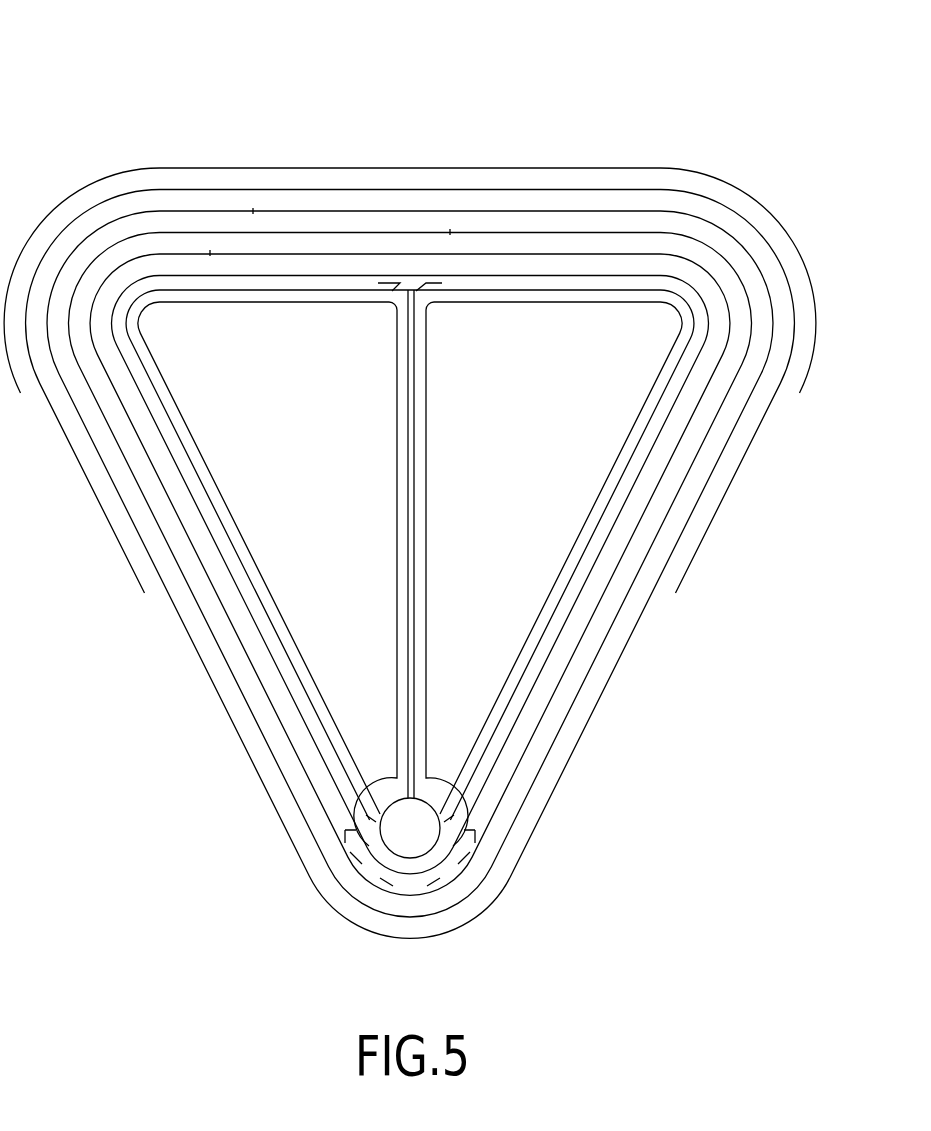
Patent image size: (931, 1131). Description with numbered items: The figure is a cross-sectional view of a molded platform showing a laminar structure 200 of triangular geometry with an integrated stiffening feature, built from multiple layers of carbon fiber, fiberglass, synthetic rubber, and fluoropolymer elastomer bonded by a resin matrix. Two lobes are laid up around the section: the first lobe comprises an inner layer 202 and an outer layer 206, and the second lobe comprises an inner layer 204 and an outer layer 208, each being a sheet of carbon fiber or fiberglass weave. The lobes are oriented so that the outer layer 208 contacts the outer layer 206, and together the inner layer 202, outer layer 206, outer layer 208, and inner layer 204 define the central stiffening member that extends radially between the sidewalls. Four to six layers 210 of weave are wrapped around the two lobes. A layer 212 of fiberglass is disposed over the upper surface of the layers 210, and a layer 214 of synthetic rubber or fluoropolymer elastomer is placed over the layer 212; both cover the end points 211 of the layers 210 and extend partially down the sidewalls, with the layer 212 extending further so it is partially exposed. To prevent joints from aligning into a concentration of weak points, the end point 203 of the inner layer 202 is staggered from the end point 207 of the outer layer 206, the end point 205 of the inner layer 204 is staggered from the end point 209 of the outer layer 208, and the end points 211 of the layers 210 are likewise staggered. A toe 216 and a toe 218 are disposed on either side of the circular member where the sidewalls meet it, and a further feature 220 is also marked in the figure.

The laminar structure 200 is at (140, 85).
The inner layer 202 is at (396, 552).
The end point 203 is at (178, 302).
The inner layer 204 is at (424, 628).
The end point 205 is at (466, 302).
The outer layer 206 is at (400, 377).
The end point 207 is at (340, 292).
The outer layer 208 is at (414, 413).
The end point 209 is at (621, 290).
The layers 210 is at (172, 252).
The end points 211 is at (512, 272).
The layer 212 is at (493, 189).
The layer 214 is at (622, 168).
The toe 216 is at (366, 872).
The toe 218 is at (467, 852).
The junction notch 220 is at (388, 285).